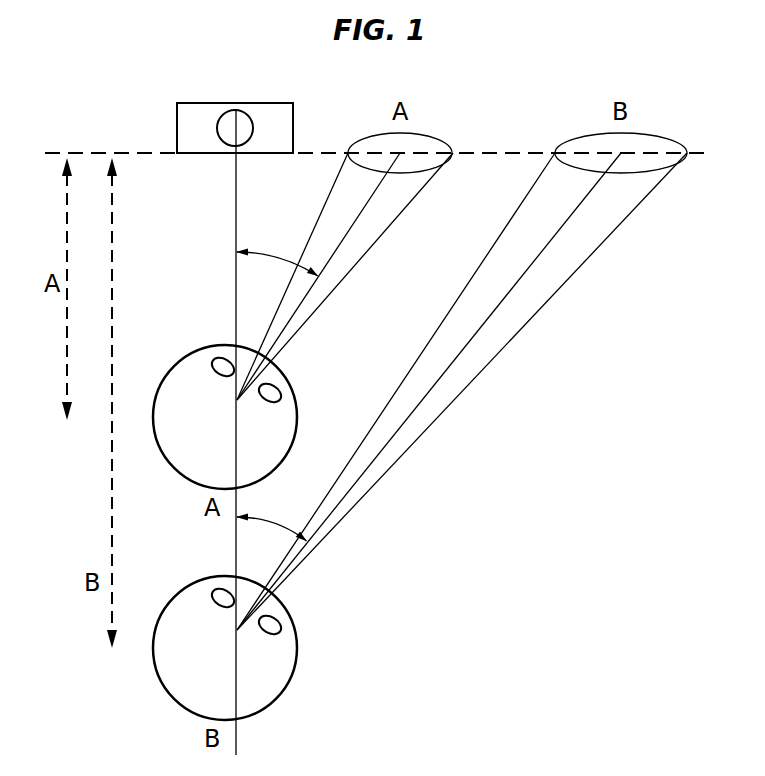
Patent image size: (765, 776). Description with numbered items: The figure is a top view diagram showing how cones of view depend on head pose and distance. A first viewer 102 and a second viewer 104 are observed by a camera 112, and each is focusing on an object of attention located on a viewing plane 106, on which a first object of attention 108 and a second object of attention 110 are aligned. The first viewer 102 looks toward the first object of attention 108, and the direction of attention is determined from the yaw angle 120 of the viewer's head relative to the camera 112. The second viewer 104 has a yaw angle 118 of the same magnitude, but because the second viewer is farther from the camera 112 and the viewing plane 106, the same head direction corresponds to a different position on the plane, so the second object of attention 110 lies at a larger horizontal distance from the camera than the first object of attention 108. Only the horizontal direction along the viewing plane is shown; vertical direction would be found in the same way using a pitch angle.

The first viewer 102 is at (294, 387).
The second viewer 104 is at (297, 663).
The viewing plane 106 is at (133, 151).
The first object of attention 108 is at (438, 137).
The second object of attention 110 is at (665, 137).
The camera 112 is at (285, 103).
The yaw angle 118 is at (267, 522).
The yaw angle 120 is at (277, 252).